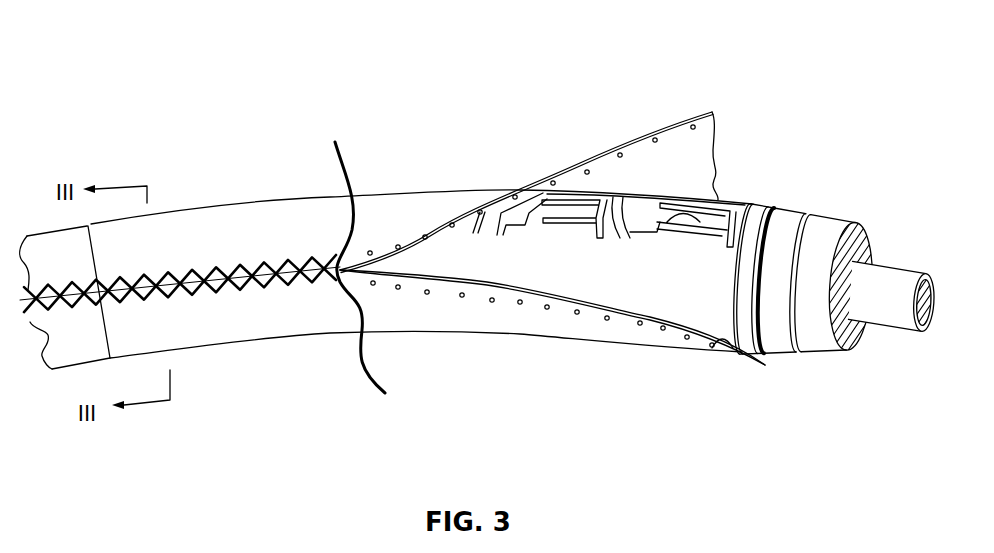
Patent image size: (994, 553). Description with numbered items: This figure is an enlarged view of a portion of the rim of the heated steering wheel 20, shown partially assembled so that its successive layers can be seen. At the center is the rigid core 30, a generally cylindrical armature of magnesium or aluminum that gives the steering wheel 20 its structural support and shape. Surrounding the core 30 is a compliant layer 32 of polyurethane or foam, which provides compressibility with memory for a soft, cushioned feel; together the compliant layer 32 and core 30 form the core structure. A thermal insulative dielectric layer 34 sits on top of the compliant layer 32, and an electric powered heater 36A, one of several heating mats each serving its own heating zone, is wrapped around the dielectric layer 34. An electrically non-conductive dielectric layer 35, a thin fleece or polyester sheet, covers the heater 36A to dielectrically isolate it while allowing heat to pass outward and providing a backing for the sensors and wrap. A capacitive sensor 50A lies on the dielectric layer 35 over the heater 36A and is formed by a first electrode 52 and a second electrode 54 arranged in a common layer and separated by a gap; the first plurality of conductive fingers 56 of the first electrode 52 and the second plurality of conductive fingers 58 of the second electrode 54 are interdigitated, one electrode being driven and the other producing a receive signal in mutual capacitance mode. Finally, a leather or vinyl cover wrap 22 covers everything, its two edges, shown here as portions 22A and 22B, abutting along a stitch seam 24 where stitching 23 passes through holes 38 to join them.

The steering wheel 20 is at (160, 163).
The cover wrap 22 is at (287, 212).
The upper sheath flap 22A is at (665, 122).
The lower sheath flap 22B is at (737, 352).
The stitching 23 is at (355, 364).
The stitch seam 24 is at (233, 267).
The rigid core 30 is at (890, 322).
The compliant layer 32 is at (823, 345).
The thermal insulative dielectric layer 34 is at (803, 219).
The electrically non-conductive dielectric layer 35 is at (777, 207).
The electric powered heater 36A is at (793, 213).
The holes 38 is at (425, 235).
The capacitive sensor 50A is at (697, 185).
The first electrode 52 is at (650, 205).
The second electrode 54 is at (740, 205).
The first plurality of conductive fingers 56 is at (650, 243).
The second plurality of conductive fingers 58 is at (698, 215).